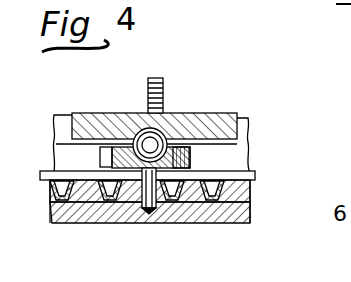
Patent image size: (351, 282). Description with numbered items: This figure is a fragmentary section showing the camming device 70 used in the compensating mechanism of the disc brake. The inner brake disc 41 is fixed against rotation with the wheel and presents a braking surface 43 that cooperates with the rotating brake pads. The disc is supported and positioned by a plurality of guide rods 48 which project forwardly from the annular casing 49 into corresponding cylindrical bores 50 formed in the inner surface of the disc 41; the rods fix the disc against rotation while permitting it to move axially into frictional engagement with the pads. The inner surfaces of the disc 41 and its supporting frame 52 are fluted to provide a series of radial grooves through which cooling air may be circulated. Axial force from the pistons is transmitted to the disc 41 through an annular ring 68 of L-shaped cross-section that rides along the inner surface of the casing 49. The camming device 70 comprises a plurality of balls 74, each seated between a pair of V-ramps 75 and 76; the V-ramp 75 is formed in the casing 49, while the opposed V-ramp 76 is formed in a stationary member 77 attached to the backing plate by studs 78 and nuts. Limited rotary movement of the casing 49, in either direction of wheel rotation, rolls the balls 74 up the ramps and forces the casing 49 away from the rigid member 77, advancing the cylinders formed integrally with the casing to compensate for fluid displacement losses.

The camming device 70 is at (208, 106).
The V-ramp 76 is at (186, 113).
The stationary member 77 is at (236, 113).
The V-ramp 75 is at (54, 144).
The annular casing 49 is at (100, 162).
The stud 78 is at (167, 80).
The guide rod 48 is at (184, 172).
The ball 74 is at (145, 136).
The supporting frame 52 is at (241, 180).
The annular ring 68 is at (241, 182).
The inner brake disc 41 is at (252, 210).
The braking surface 43 is at (68, 222).
The cylindrical bore 50 is at (150, 214).